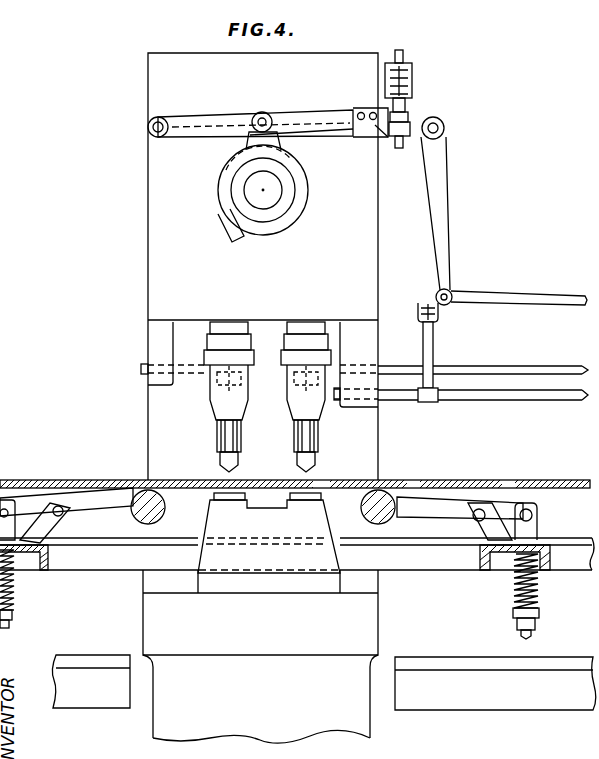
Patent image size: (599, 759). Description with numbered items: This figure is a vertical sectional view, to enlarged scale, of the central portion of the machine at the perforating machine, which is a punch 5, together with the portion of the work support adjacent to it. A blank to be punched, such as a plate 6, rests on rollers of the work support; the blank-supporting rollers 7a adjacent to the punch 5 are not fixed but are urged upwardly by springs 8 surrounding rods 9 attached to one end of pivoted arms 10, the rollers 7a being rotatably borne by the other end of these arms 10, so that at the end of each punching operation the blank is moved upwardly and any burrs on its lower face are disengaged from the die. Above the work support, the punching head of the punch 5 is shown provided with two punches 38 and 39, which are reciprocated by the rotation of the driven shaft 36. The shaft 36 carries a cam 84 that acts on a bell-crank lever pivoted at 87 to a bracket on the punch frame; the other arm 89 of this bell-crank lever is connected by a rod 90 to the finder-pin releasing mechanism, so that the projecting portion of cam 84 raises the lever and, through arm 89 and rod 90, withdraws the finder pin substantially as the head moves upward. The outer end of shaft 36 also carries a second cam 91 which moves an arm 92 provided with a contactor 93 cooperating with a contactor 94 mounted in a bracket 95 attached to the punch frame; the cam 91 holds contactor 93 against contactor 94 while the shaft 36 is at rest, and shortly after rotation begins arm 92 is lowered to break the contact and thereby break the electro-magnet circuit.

The punch 5 is at (147, 268).
The plate 6 is at (438, 480).
The blank-supporting rollers 7a is at (138, 523).
The springs 8 is at (13, 590).
The rods 9 is at (8, 630).
The pivoted arms 10 is at (87, 500).
The driven shaft 36 is at (266, 191).
The punch 38 is at (216, 445).
The punch 39 is at (317, 462).
The cam 84 is at (220, 230).
The pivot 87 is at (446, 128).
The arm 89 is at (441, 210).
The rod 90 is at (536, 296).
The second cam 91 is at (210, 172).
The arm 92 is at (225, 118).
The contactor 93 is at (412, 122).
The contactor 94 is at (410, 112).
The bracket 95 is at (414, 72).